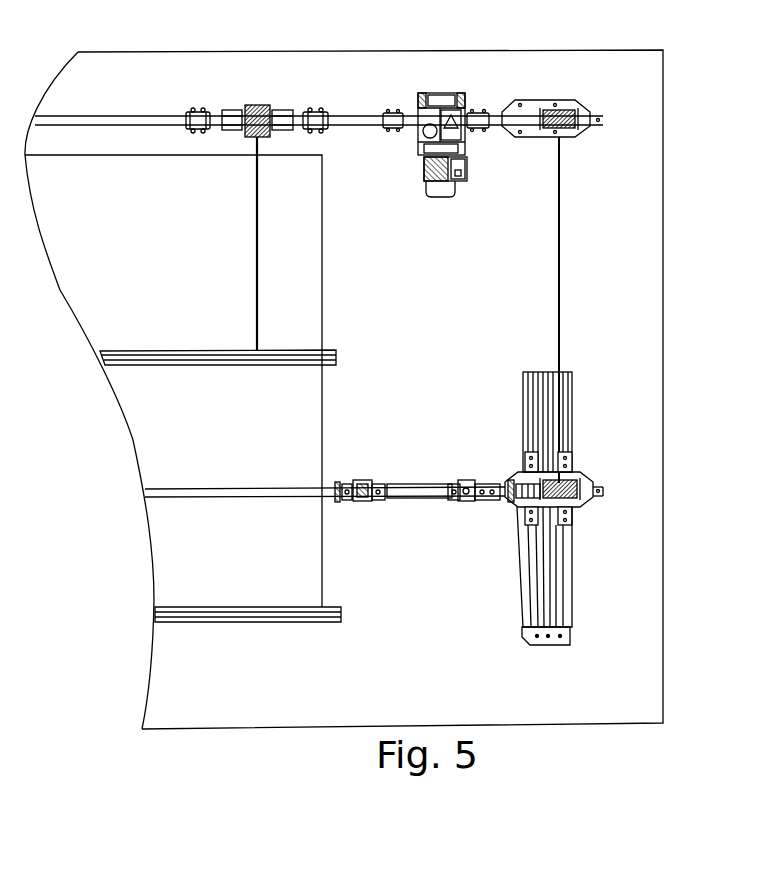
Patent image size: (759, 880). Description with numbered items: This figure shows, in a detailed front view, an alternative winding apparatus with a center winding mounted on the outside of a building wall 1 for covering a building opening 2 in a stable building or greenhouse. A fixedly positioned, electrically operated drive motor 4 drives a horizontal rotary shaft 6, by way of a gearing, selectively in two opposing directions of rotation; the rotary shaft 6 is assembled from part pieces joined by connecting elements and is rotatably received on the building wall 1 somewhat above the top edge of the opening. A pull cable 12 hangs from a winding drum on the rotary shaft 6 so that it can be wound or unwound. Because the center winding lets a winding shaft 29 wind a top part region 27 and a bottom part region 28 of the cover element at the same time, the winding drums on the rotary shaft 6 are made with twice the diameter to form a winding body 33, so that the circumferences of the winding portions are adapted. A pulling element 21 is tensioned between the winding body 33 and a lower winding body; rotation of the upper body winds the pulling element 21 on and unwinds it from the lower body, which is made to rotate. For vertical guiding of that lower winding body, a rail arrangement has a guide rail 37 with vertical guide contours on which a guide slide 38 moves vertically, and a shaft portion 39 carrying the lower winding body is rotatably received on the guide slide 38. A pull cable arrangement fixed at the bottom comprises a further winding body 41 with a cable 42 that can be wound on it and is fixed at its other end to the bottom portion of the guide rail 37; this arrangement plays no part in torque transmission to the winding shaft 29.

The building wall 1 is at (634, 200).
The building opening 2 is at (173, 381).
The drive motor 4 is at (447, 197).
The rotary shaft 6 is at (148, 110).
The pull cable 12 is at (258, 233).
The pulling element 21 is at (560, 270).
The top part region 27 is at (315, 412).
The bottom part region 28 is at (305, 546).
The winding shaft 29 is at (330, 483).
The winding body 33 is at (572, 103).
The guide rail 37 is at (527, 370).
The guide slide 38 is at (575, 512).
The shaft portion 39 is at (600, 482).
The further winding body 41 is at (512, 505).
The cable 42 is at (520, 598).